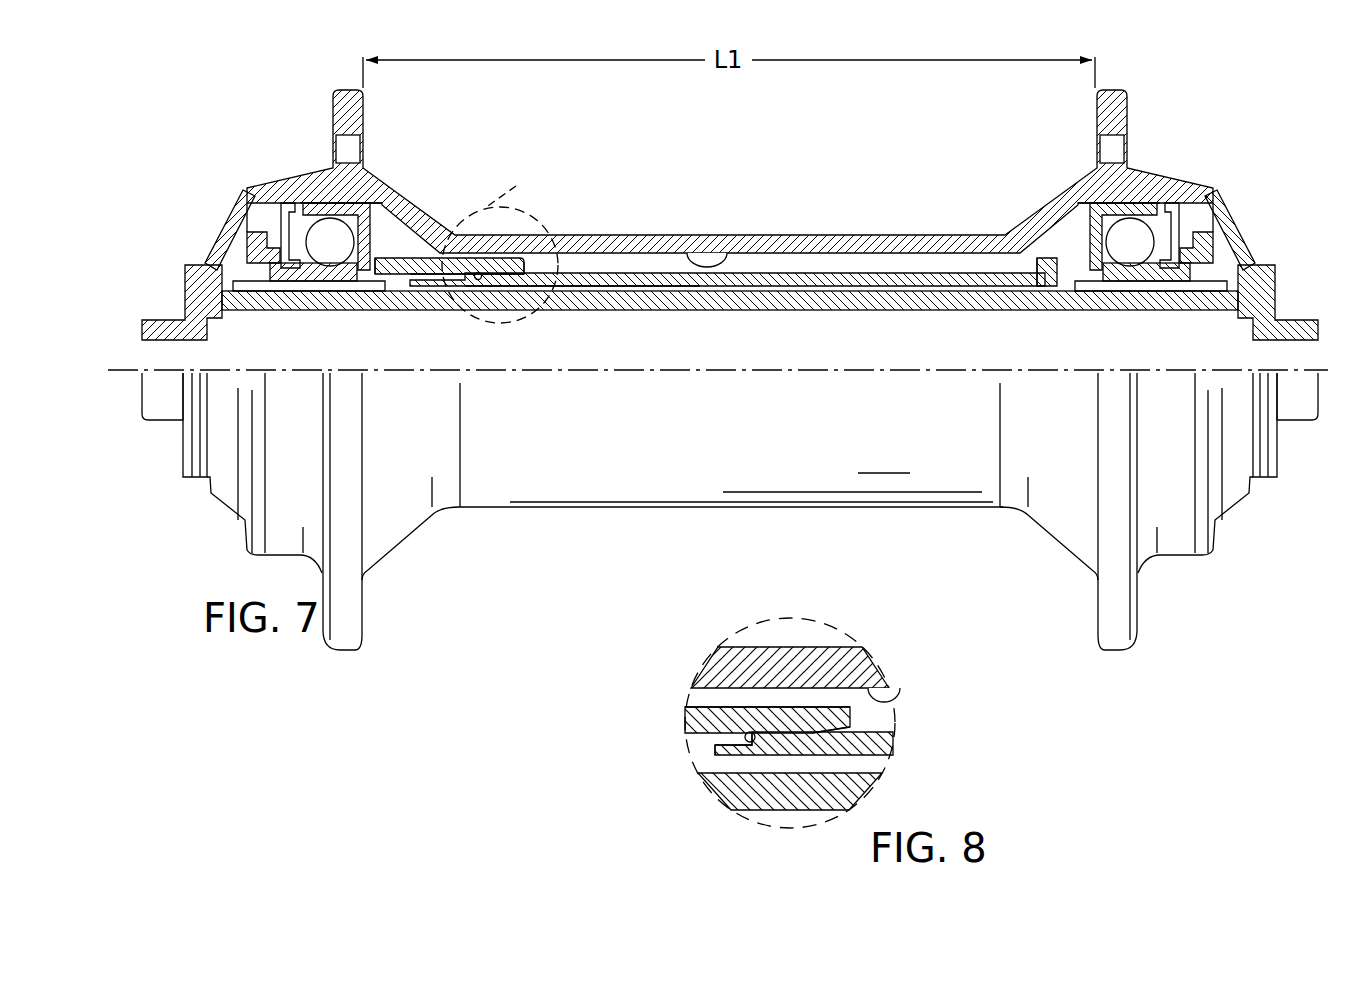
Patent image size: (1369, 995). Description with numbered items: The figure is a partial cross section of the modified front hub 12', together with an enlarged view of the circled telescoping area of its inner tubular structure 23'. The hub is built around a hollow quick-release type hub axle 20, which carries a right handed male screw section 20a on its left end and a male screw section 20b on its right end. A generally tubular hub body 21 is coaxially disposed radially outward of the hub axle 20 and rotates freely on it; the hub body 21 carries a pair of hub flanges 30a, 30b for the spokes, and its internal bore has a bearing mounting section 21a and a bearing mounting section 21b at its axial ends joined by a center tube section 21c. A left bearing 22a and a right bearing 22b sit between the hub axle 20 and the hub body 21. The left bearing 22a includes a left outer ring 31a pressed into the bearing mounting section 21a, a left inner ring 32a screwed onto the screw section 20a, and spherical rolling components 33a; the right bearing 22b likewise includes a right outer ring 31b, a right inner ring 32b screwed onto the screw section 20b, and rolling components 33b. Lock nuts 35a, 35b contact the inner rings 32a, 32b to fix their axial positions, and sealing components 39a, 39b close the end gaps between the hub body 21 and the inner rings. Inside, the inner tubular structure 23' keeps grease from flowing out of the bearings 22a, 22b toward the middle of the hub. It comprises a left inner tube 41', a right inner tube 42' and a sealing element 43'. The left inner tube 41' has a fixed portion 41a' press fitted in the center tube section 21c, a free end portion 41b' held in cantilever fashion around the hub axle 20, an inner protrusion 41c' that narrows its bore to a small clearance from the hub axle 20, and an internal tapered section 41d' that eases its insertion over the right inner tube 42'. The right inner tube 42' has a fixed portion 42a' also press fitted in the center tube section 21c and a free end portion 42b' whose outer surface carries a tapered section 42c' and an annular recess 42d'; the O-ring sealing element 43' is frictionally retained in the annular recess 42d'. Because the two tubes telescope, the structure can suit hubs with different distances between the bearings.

In FIG. 7, the modified front hub 12' is at (725, 361).
In FIG. 7, the hub axle 20 is at (750, 314).
In FIG. 8, the hub axle 20 is at (790, 808).
In FIG. 7, the male screw section 20a is at (283, 300).
In FIG. 7, the male screw section 20b is at (1172, 300).
In FIG. 7, the hub body 21 is at (849, 235).
In FIG. 8, the hub body 21 is at (808, 645).
In FIG. 7, the bearing mounting section 21a is at (322, 237).
In FIG. 7, the bearing mounting section 21b is at (1090, 230).
In FIG. 7, the center tube section 21c is at (715, 253).
In FIG. 8, the center tube section 21c is at (882, 690).
In FIG. 7, the left bearing 22a is at (310, 115).
In FIG. 7, the right bearing 22b is at (1150, 115).
In FIG. 7, the inner tubular structure 23' is at (716, 223).
In FIG. 8, the inner tubular structure 23' is at (766, 700).
In FIG. 7, the hub flange 30a is at (347, 113).
In FIG. 7, the hub flange 30b is at (1112, 113).
In FIG. 7, the left outer ring 31a is at (310, 222).
In FIG. 7, the right outer ring 31b is at (1150, 222).
In FIG. 7, the left inner ring 32a is at (243, 257).
In FIG. 7, the right inner ring 32b is at (1215, 257).
In FIG. 7, the rolling components 33a is at (286, 230).
In FIG. 7, the rolling components 33b is at (1172, 230).
In FIG. 7, the lock nut 35a is at (205, 262).
In FIG. 7, the lock nut 35b is at (1252, 262).
In FIG. 7, the left sealing components 39a is at (212, 219).
In FIG. 7, the right sealing components 39b is at (1243, 216).
In FIG. 7, the left inner tube 41' is at (471, 202).
In FIG. 8, the left inner tube 41' is at (749, 688).
In FIG. 7, the fixed portion 41a' is at (411, 219).
In FIG. 7, the free end portion 41b' is at (547, 234).
In FIG. 7, the inner protrusion 41c' is at (467, 315).
In FIG. 8, the inner protrusion 41c' is at (767, 648).
In FIG. 8, the tapered section 41d' is at (884, 716).
In FIG. 7, the right inner tube 42' is at (733, 208).
In FIG. 8, the right inner tube 42' is at (831, 772).
In FIG. 7, the fixed portion 42a' is at (990, 242).
In FIG. 7, the free end portion 42b' is at (582, 322).
In FIG. 8, the tapered section 42c' is at (673, 759).
In FIG. 8, the annular recess 42d' is at (678, 778).
In FIG. 7, the sealing element 43' is at (506, 316).
In FIG. 8, the sealing element 43' is at (696, 748).